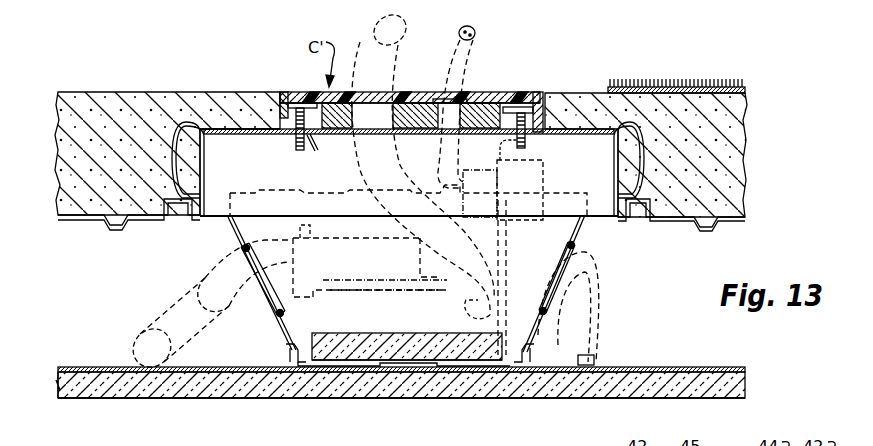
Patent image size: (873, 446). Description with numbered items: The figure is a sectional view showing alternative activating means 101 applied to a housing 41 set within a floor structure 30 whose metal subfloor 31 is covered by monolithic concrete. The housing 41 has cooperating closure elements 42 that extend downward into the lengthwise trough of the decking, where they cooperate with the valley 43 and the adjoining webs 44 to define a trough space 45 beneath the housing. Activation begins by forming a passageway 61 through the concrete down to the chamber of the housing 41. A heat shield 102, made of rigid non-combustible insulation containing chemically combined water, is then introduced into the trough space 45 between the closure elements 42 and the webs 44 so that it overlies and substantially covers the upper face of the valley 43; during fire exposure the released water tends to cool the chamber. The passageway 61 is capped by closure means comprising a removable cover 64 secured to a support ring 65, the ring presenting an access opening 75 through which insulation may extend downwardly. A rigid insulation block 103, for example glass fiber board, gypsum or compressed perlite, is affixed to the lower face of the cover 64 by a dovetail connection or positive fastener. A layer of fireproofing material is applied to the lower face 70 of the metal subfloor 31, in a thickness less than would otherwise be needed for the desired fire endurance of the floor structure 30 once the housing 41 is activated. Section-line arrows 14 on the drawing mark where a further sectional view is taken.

The floor structure 30 is at (770, 118).
The metal subfloor 31 is at (690, 367).
The housing 41 is at (258, 130).
The closure elements 42 is at (381, 270).
The valley 43 is at (408, 356).
The webs 44 is at (290, 346).
The trough space 45 is at (347, 324).
The passageway 61 is at (286, 135).
The cover 64 is at (478, 92).
The support ring 65 is at (538, 92).
The lower face 70 is at (732, 376).
The access opening 75 is at (511, 120).
The activating means 101 is at (520, 77).
The heat shield 102 is at (446, 370).
The insulation block 103 is at (420, 92).
The section line 14 is at (407, 203).